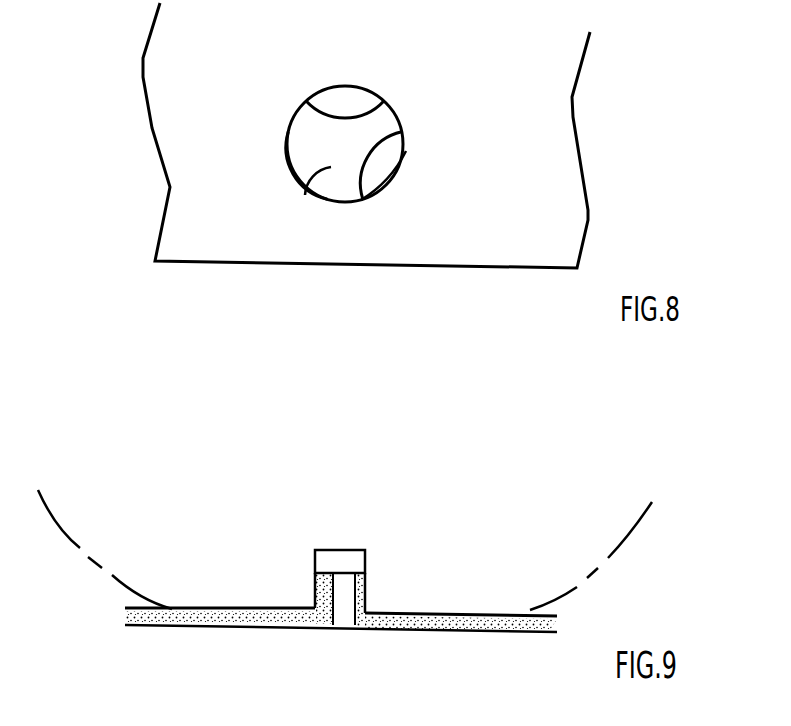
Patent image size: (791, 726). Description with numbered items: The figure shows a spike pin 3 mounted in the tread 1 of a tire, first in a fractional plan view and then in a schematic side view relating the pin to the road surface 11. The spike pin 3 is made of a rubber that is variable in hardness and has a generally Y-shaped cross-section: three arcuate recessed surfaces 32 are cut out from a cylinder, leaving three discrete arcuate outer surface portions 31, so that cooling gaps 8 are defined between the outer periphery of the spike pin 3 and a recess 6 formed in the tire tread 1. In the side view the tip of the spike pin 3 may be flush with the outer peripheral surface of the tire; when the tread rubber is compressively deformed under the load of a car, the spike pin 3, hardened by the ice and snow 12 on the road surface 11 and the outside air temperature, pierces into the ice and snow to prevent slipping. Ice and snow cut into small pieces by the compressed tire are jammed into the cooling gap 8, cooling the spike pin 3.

In FIG. 8, the tire tread 1 is at (555, 103).
In FIG. 9, the tire tread 1 is at (620, 550).
In FIG. 8, the spike pin 3 is at (382, 87).
In FIG. 9, the spike pin 3 is at (341, 622).
In FIG. 8, the recess 6 is at (322, 198).
In FIG. 9, the recess 6 is at (365, 578).
In FIG. 8, the cooling gap 8 is at (347, 97).
In FIG. 9, the cooling gap 8 is at (313, 587).
In FIG. 9, the road surface 11 is at (480, 630).
In FIG. 9, the ice and snow 12 is at (480, 615).
In FIG. 8, the arcuate outer surface portion 31 is at (298, 108).
In FIG. 8, the arcuate recessed surface 32 is at (330, 112).